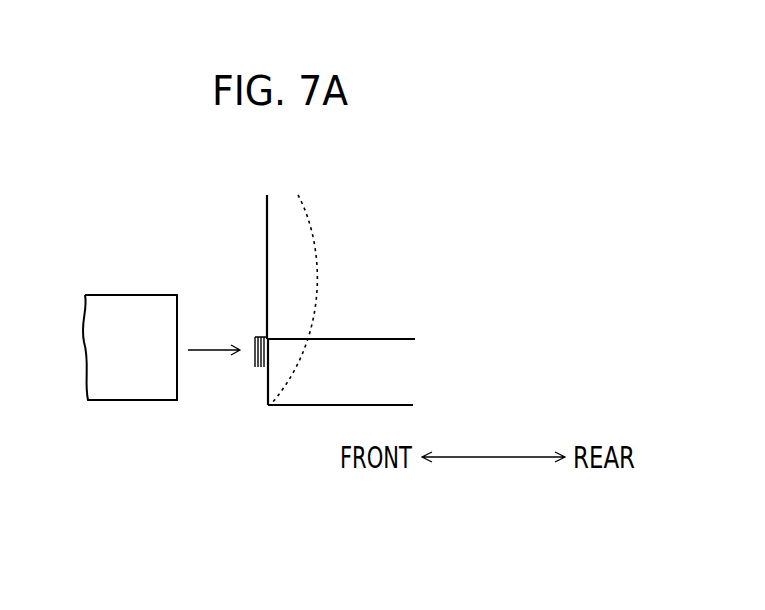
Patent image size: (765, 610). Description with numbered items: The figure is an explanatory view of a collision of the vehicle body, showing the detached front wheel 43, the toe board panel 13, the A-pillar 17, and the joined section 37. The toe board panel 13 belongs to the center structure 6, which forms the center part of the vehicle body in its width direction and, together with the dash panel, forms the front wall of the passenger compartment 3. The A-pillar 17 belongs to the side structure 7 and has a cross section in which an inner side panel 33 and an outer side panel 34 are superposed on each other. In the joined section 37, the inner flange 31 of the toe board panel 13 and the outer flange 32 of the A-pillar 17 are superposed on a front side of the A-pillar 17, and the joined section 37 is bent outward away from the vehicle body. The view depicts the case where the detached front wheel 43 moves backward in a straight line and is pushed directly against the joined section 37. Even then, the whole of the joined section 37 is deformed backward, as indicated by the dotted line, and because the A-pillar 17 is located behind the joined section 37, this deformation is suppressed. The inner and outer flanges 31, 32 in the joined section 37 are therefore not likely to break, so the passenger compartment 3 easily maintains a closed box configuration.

The passenger compartment 3 is at (363, 319).
The toe board panel 13 is at (386, 267).
The center structure 6 is at (267, 262).
The A-pillar 17 is at (402, 373).
The side structure 7 is at (402, 373).
The inner side panel 33 is at (415, 339).
The outer side panel 34 is at (368, 397).
The joined section 37 is at (231, 422).
The inner flange 31 is at (255, 366).
The outer flange 32 is at (258, 368).
The detached front wheel 43 is at (110, 400).